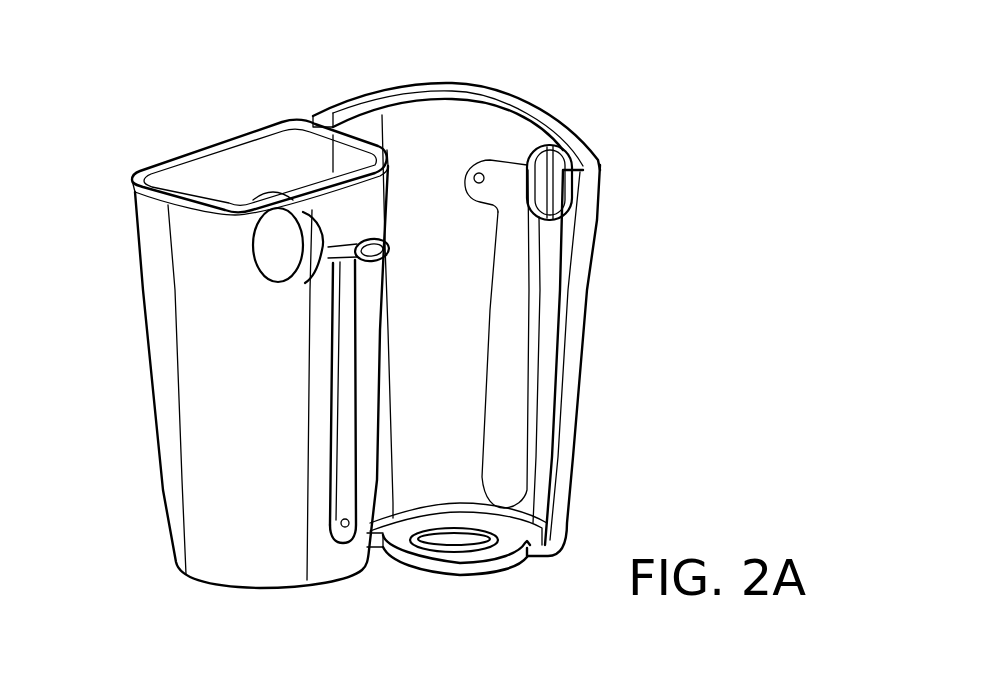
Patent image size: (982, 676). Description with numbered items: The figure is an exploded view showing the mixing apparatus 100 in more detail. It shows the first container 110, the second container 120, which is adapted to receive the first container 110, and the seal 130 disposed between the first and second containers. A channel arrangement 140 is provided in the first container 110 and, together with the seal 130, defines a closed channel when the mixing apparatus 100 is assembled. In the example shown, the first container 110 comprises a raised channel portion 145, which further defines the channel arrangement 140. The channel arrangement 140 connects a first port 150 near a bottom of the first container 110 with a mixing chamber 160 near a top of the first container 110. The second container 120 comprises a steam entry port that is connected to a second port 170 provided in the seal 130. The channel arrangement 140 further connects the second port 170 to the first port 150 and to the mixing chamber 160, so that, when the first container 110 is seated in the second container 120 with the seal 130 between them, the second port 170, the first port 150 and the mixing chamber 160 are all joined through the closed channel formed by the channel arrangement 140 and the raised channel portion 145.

The mixing apparatus 100 is at (154, 76).
The first container 110 is at (240, 152).
The second container 120 is at (449, 118).
The seal 130 is at (509, 338).
The channel arrangement 140 is at (347, 350).
The raised channel portion 145 is at (330, 443).
The first port 150 is at (340, 523).
The mixing chamber 160 is at (273, 243).
The second port 170 is at (482, 172).